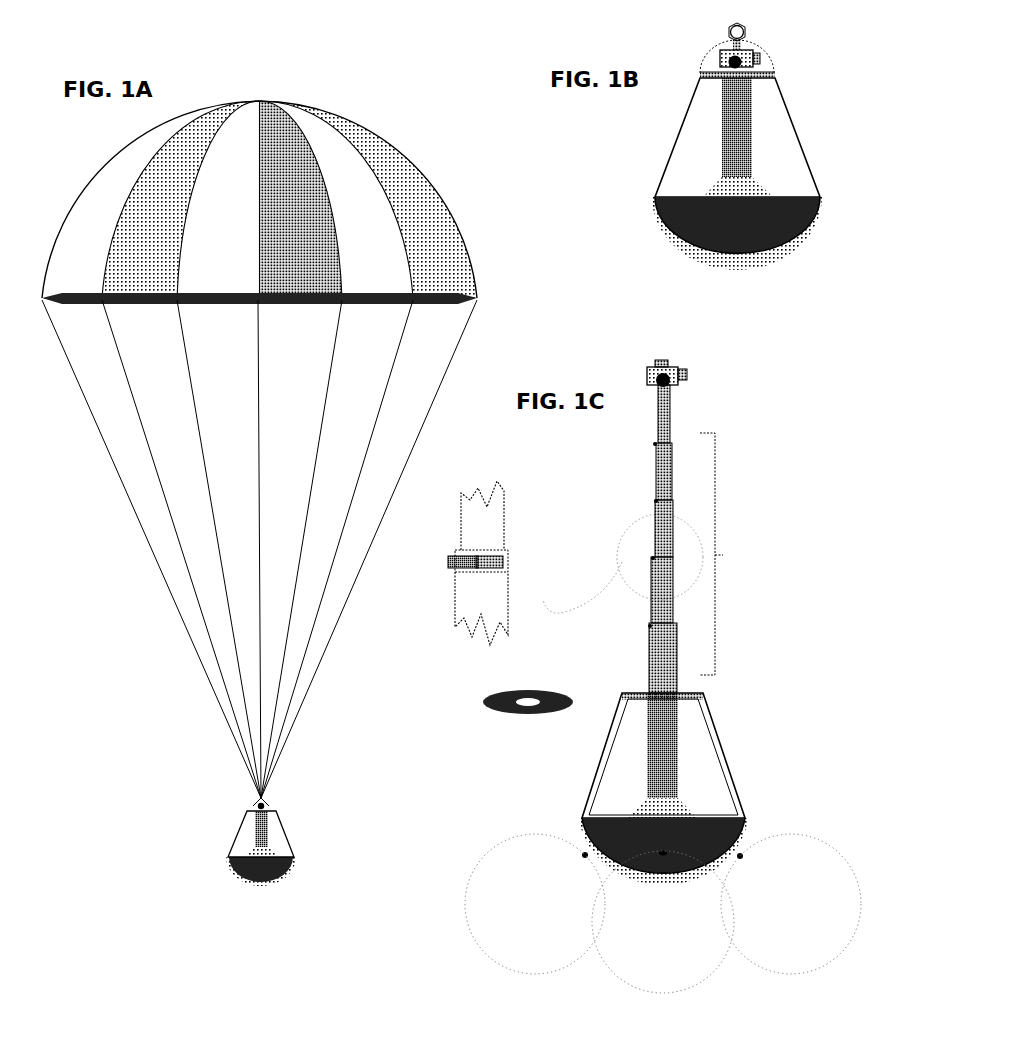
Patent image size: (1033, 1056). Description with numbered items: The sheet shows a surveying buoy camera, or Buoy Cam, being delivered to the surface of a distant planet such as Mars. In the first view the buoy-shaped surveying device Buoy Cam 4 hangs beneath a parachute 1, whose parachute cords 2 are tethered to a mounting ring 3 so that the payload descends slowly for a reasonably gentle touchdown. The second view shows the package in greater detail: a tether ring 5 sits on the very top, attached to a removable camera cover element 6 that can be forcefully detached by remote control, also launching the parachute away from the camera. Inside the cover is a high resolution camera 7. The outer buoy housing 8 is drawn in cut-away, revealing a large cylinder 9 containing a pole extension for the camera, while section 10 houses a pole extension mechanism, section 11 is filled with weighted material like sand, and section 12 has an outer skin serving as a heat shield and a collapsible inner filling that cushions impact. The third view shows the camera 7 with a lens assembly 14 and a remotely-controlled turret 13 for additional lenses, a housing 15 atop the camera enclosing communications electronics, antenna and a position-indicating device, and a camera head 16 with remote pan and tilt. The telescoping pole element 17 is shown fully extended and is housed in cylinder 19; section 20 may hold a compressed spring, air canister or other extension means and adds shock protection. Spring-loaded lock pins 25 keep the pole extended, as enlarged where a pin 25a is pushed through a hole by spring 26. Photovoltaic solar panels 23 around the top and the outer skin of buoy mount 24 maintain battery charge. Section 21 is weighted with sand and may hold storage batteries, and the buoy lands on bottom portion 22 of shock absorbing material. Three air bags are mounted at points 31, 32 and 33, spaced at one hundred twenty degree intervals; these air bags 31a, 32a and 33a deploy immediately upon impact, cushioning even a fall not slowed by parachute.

In FIG. 1A, the parachute 1 is at (435, 179).
In FIG. 1A, the parachute cords 2 is at (193, 645).
In FIG. 1A, the mounting ring 3 is at (266, 801).
In FIG. 1A, the surveying device Buoy Cam 4 is at (237, 843).
In FIG. 1B, the tether ring 5 is at (746, 33).
In FIG. 1B, the removable camera cover element 6 is at (713, 54).
In FIG. 1B, the camera 7 is at (728, 63).
In FIG. 1C, the camera 7 is at (648, 377).
In FIG. 1B, the outer buoy housing 8 is at (685, 115).
In FIG. 1C, the outer buoy housing 8 is at (708, 718).
In FIG. 1B, the large cylinder 9 is at (722, 160).
In FIG. 1B, the section housing pole extension mechanism 10 is at (713, 187).
In FIG. 1B, the weighted section 11 is at (675, 218).
In FIG. 1B, the bottom section 12 is at (697, 253).
In FIG. 1C, the remotely-controlled turret 13 is at (679, 368).
In FIG. 1C, the lens assembly 14 is at (688, 375).
In FIG. 1C, the housing 15 is at (659, 362).
In FIG. 1C, the camera head 16 is at (669, 386).
In FIG. 1C, the telescoping pole element 17 is at (723, 555).
In FIG. 1C, the cylinder 19 is at (678, 765).
In FIG. 1C, the pole extension section 20 is at (683, 808).
In FIG. 1C, the weighted section 21 is at (722, 834).
In FIG. 1C, the bottom portion 22 is at (677, 889).
In FIG. 1C, the photovoltaic solar panels 23 is at (546, 688).
In FIG. 1C, the buoy mount 24 is at (603, 752).
In FIG. 1C, the spring-loaded lock pins 25 is at (649, 626).
In FIG. 1C, the pin 25a is at (451, 567).
In FIG. 1C, the spring 26 is at (493, 569).
In FIG. 1C, the air bag mounting point 31 is at (583, 853).
In FIG. 1C, the air bag mounting point 32 is at (645, 845).
In FIG. 1C, the air bag mounting point 33 is at (745, 856).
In FIG. 1C, the air bag 31a is at (465, 902).
In FIG. 1C, the air bag 32a is at (615, 960).
In FIG. 1C, the air bag 33a is at (787, 967).